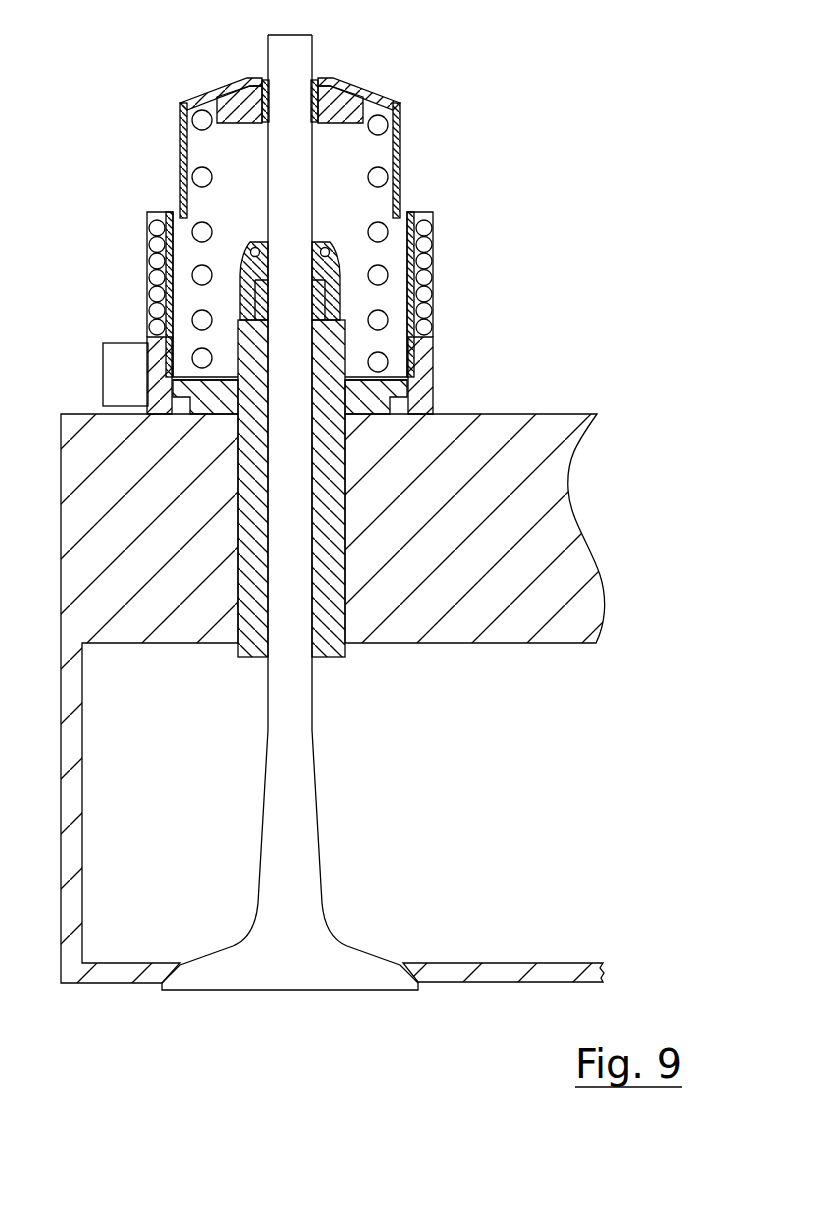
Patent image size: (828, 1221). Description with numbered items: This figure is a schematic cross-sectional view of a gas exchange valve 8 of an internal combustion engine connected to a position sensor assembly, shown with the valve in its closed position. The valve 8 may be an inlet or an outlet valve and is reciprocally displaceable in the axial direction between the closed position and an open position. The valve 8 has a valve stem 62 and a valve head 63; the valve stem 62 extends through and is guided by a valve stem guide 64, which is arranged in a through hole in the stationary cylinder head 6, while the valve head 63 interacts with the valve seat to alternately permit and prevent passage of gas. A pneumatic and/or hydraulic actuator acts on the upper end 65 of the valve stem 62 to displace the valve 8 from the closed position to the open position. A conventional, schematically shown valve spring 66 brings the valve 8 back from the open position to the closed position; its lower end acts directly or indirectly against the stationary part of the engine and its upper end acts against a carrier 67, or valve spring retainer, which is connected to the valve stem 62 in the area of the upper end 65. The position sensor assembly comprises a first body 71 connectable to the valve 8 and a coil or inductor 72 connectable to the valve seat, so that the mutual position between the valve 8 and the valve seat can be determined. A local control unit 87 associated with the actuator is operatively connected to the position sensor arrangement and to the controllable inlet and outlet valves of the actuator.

The cylinder head 6 is at (568, 520).
The gas exchange valve 8 is at (290, 552).
The valve stem 62 is at (300, 773).
The valve head 63 is at (357, 973).
The valve stem guide 64 is at (333, 648).
The upper end of the valve stem 65 is at (278, 33).
The valve spring 66 is at (380, 178).
The carrier 67 is at (347, 97).
The first body 71 is at (402, 137).
The coil or inductor 72 is at (425, 279).
The local control unit 87 is at (120, 367).